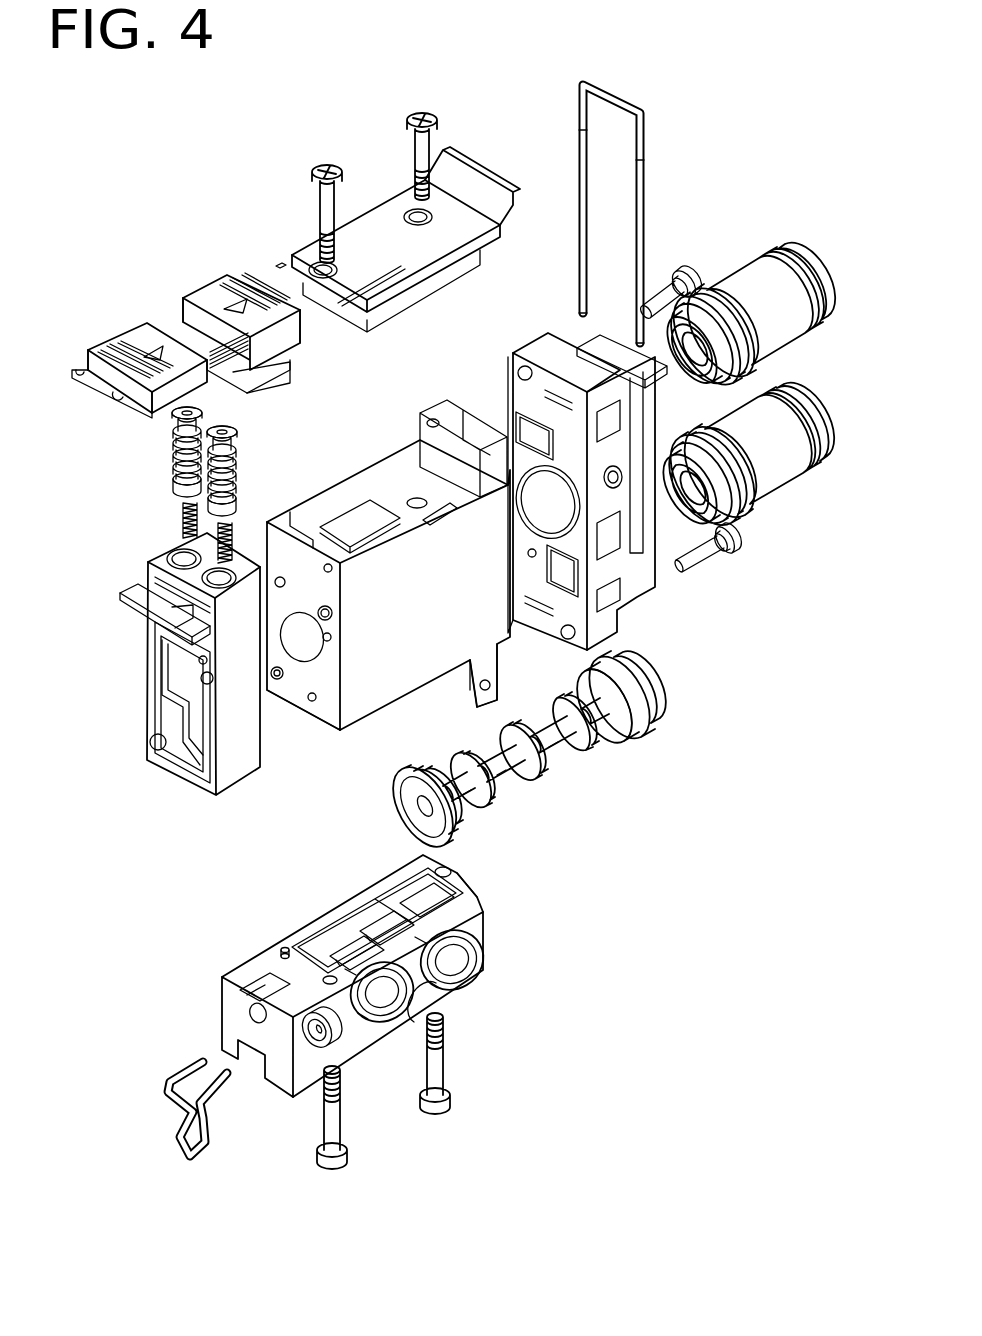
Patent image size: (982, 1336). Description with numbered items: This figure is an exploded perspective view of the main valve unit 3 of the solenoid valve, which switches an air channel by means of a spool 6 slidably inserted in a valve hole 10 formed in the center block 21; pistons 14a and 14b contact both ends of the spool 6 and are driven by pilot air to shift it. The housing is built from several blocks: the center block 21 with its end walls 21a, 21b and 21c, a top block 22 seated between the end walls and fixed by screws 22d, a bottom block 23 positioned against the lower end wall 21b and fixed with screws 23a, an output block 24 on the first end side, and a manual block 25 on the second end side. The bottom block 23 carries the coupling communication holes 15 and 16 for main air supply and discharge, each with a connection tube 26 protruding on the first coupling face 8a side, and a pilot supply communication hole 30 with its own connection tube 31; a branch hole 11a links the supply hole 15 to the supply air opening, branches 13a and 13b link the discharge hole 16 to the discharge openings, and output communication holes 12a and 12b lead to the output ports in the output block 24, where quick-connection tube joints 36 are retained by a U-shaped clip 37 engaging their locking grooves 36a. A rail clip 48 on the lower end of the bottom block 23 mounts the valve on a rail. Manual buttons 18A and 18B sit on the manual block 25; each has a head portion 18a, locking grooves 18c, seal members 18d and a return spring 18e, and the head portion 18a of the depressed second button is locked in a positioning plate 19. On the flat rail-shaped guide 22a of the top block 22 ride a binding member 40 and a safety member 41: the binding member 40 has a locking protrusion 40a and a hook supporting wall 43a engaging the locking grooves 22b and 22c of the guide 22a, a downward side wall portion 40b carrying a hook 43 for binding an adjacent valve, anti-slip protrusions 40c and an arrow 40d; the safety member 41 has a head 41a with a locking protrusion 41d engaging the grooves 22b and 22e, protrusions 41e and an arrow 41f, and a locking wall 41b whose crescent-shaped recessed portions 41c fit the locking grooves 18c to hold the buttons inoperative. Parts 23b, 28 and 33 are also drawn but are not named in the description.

The main valve unit 3 is at (723, 157).
The spool 6 is at (508, 749).
The first coupling face 8a is at (358, 717).
The valve hole 10 is at (308, 657).
The branch hole 11a is at (383, 930).
The output communication hole 12a is at (373, 522).
The output communication hole 12b is at (565, 600).
The branch 13a is at (337, 957).
The branch 13b is at (417, 873).
The piston 14a is at (660, 723).
The piston 14b is at (405, 805).
The coupling communication hole 15 is at (458, 973).
The coupling communication hole 16 is at (390, 1000).
The first manual button 18A is at (158, 458).
The second manual button 18B is at (250, 470).
The head portion 18a is at (180, 420).
The locking groove 18c is at (172, 450).
The seal member 18d is at (232, 500).
The return spring 18e is at (180, 525).
The positioning plate 19 is at (140, 617).
The center block 21 is at (420, 551).
The end wall 21a is at (447, 407).
The end wall 21b is at (507, 683).
The end wall 21c is at (460, 675).
The top block 22 is at (473, 173).
The guide 22a is at (375, 228).
The locking groove 22b is at (277, 265).
The locking groove 22c is at (342, 323).
The screw 22d is at (332, 168).
The locking groove 22e is at (383, 282).
The bottom block 23 is at (363, 977).
The screw 23a is at (332, 1152).
The projection 23b is at (478, 898).
The output block 24 is at (603, 464).
The manual block 25 is at (237, 777).
The connection tube 26 is at (463, 940).
The seal ring 28 is at (420, 993).
The pilot supply communication hole 30 is at (328, 1047).
The connection tube 31 is at (320, 1043).
The pilot exhaust hole 33 is at (333, 1030).
The tube joint 36 is at (753, 270).
The locking groove 36a is at (755, 355).
The U-shaped clip 37 is at (615, 100).
The binding member 40 is at (256, 296).
The locking protrusion 40a is at (187, 317).
The side wall portion 40b is at (293, 337).
The protrusions 40c is at (255, 280).
The arrow 40d is at (228, 300).
The safety member 41 is at (113, 352).
The head 41a is at (125, 337).
The locking wall 41b is at (90, 373).
The crescent-shaped recessed portion 41c is at (78, 375).
The locking protrusion 41d is at (150, 410).
The protrusions 41e is at (103, 343).
The arrow 41f is at (150, 345).
The hook 43 is at (277, 379).
The hook supporting wall 43a is at (240, 388).
The rail clip 48 is at (183, 1152).